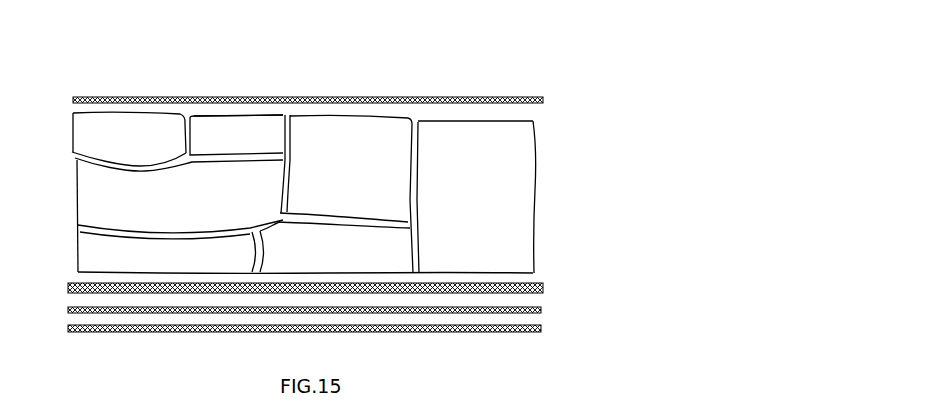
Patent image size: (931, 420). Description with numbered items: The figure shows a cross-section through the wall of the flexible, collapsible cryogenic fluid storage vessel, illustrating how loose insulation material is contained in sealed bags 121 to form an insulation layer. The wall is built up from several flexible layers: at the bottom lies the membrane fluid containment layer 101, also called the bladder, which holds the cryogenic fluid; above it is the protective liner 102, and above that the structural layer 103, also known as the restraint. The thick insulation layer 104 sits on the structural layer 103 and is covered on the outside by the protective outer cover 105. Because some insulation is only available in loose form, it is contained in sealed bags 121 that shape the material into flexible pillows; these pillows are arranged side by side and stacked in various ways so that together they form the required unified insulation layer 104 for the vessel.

The membrane fluid containment layer 101 is at (545, 330).
The protective liner 102 is at (545, 312).
The structural layer 103 is at (545, 289).
The insulation layers 104 is at (379, 154).
The protective outer cover 105 is at (546, 101).
The sealed bags 121 is at (326, 111).